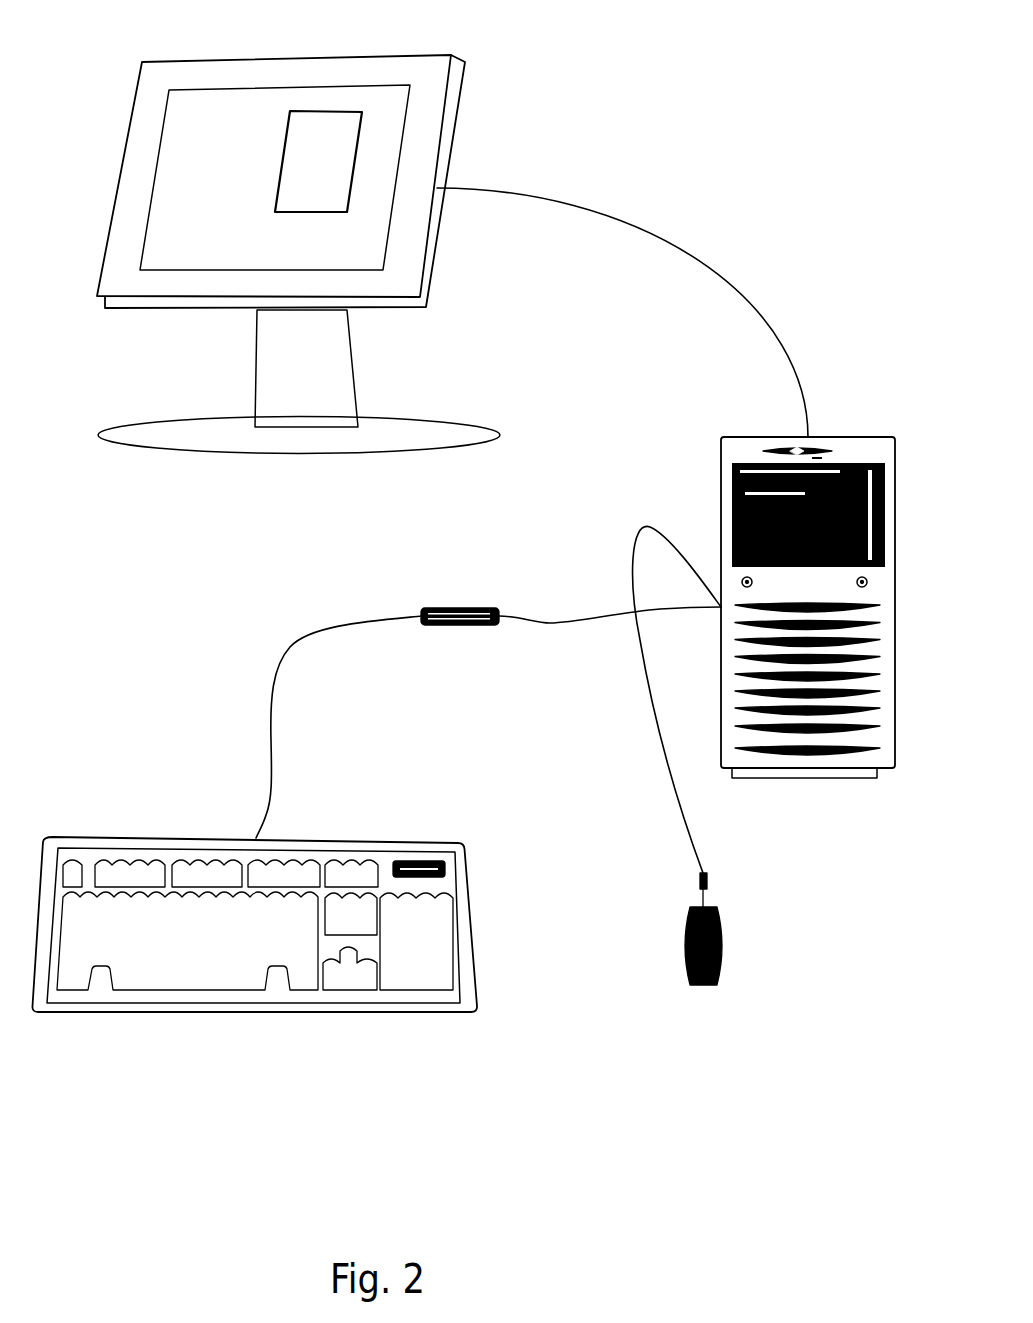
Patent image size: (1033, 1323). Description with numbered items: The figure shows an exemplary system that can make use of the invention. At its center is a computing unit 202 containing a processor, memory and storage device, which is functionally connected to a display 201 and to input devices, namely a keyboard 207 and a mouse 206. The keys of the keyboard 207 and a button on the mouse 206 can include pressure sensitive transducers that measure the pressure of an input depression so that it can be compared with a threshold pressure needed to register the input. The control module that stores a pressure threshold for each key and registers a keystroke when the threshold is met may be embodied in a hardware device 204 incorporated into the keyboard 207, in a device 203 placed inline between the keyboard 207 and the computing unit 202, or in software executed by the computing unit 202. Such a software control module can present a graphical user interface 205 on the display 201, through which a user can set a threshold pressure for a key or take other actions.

The display 201 is at (298, 270).
The computing unit 202 is at (808, 624).
The device 203 is at (460, 632).
The hardware device 204 is at (418, 860).
The graphical user interface 205 is at (313, 125).
The mouse 206 is at (701, 946).
The keyboard 207 is at (254, 942).